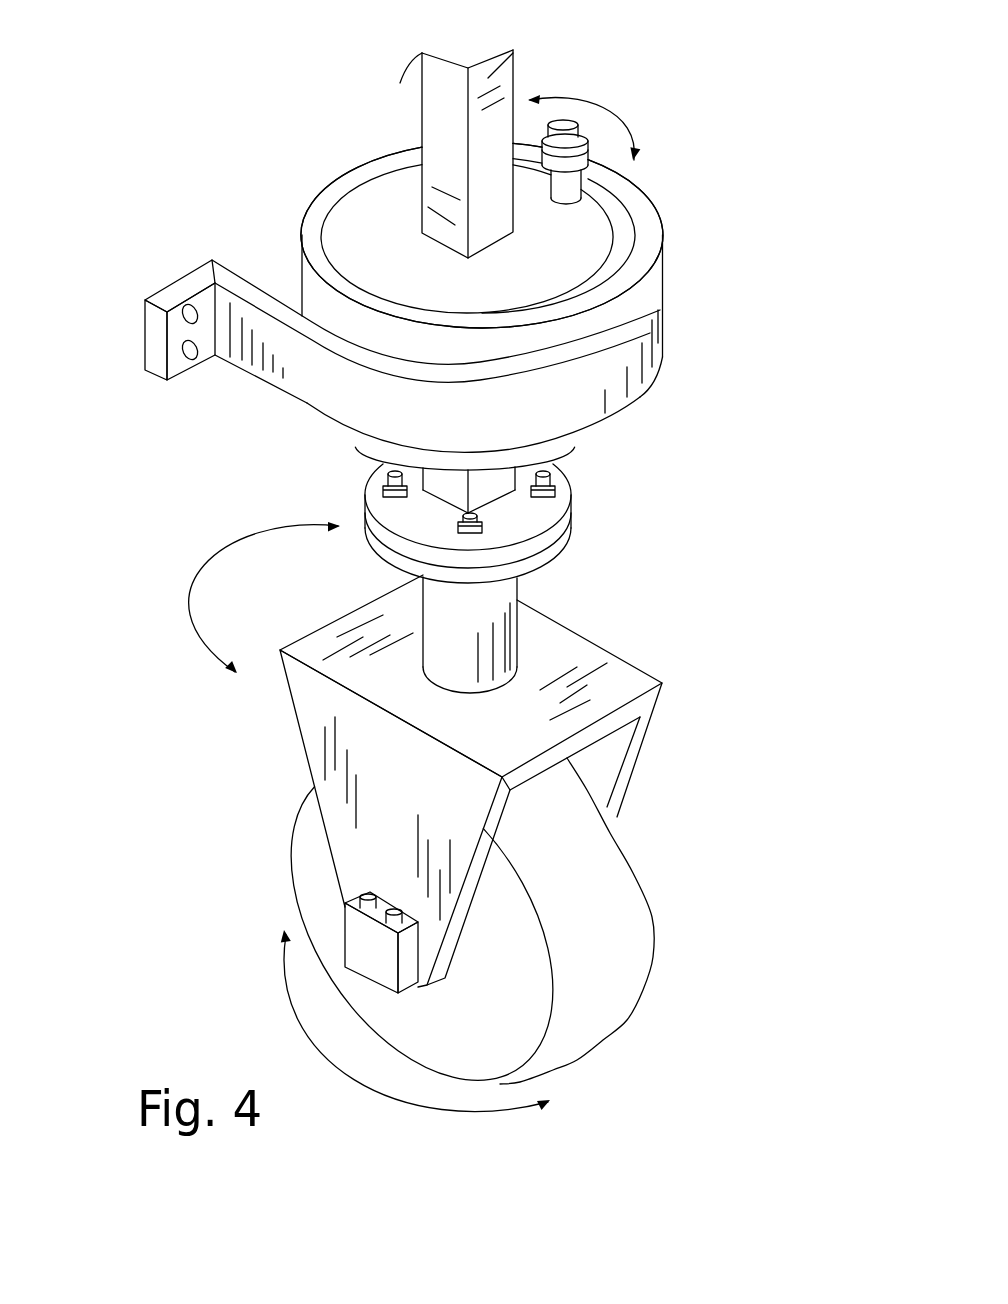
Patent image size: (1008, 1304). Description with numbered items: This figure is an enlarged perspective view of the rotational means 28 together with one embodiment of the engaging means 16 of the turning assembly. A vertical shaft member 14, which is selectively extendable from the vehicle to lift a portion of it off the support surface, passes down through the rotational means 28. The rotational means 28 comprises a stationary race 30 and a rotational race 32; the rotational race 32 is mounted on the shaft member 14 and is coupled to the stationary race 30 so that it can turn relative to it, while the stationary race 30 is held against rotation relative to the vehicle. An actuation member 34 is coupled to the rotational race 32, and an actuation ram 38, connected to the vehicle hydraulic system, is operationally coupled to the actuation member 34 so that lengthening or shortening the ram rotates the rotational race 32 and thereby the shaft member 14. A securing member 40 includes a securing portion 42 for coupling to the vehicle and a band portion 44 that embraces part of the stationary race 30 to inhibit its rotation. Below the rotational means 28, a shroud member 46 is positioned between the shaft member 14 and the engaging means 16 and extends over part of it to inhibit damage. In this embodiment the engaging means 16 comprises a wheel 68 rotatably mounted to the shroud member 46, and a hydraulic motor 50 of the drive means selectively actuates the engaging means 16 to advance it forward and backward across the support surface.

The shaft member 14 is at (567, 72).
The engaging means 16 is at (688, 1044).
The rotational means 28 is at (296, 128).
The stationary race 30 is at (392, 150).
The rotational race 32 is at (375, 236).
The actuation member 34 is at (567, 183).
The actuation ram 38 is at (582, 153).
The securing member 40 is at (197, 263).
The securing portion 42 is at (172, 320).
The band portion 44 is at (638, 338).
The shroud member 46 is at (633, 683).
The hydraulic motor 50 is at (358, 938).
The wheel 68 is at (611, 915).